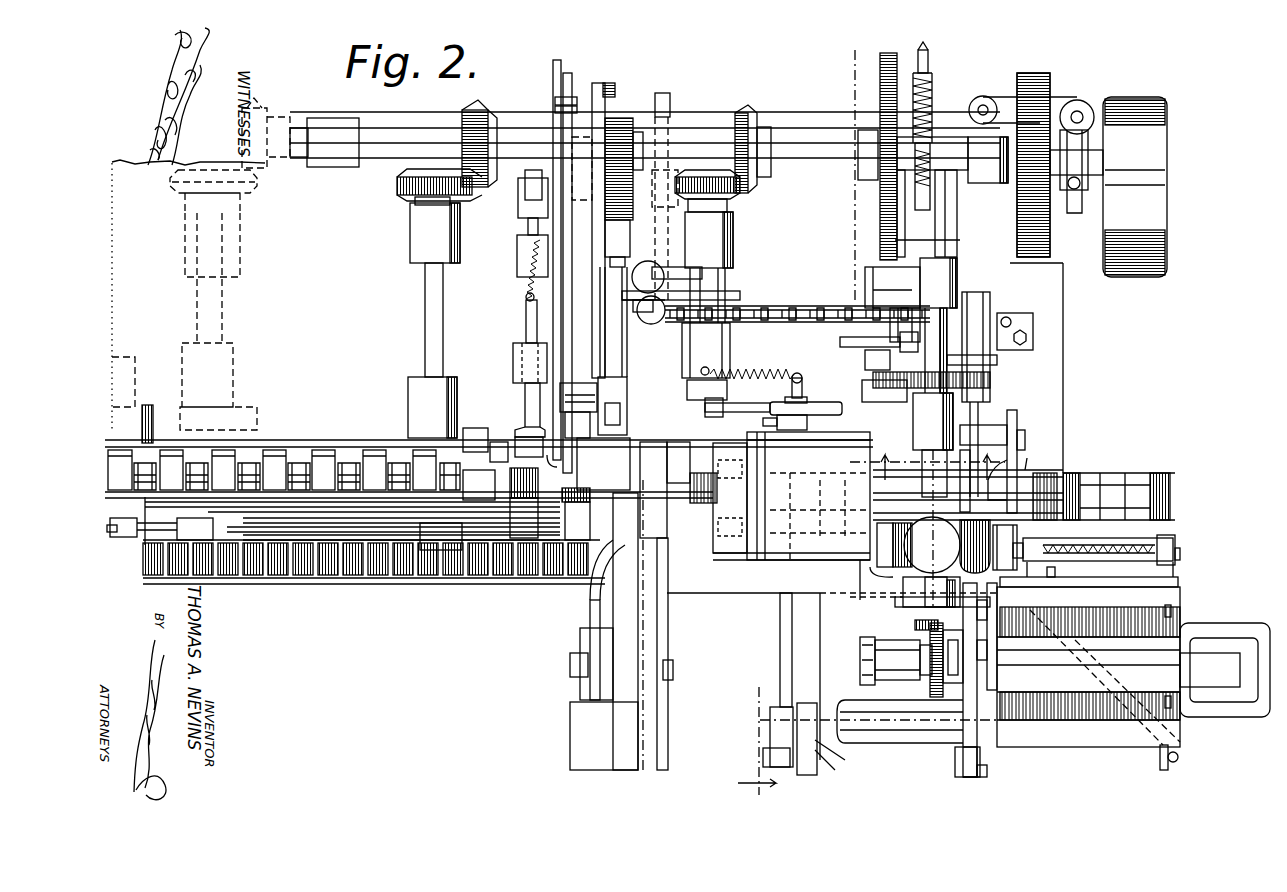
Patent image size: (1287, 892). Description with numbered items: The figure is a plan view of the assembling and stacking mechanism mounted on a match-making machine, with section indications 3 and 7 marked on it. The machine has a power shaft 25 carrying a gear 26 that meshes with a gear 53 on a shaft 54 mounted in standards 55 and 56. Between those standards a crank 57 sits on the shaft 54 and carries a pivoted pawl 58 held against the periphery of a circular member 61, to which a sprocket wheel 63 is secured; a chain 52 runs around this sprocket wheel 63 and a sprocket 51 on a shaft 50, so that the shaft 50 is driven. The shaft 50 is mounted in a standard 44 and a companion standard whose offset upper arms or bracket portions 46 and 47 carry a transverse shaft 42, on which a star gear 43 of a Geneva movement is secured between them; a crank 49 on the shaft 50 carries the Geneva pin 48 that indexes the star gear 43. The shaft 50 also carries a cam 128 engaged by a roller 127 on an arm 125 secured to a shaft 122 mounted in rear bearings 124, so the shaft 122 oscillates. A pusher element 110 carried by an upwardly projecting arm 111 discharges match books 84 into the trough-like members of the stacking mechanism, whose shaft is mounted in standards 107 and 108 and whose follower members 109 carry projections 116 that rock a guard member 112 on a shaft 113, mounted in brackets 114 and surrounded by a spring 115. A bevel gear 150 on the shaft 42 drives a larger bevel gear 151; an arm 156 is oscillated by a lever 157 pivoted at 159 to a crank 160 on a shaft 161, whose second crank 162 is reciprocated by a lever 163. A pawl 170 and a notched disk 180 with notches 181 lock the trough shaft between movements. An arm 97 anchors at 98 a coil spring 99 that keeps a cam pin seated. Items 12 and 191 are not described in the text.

The section line 3- 3 is at (860, 72).
The section line 7-7 / carriage 7 is at (920, 467).
The vertical column 12 is at (998, 306).
The power shaft 25 is at (798, 150).
The gear 26 is at (748, 118).
The shaft 42 is at (1017, 437).
The star gear 43 is at (978, 382).
The standard 44 is at (865, 393).
The offset upper arm or bracket portion 46 is at (870, 278).
The offset upper arm or bracket portion 47 is at (940, 285).
The pin 48 is at (865, 357).
The crank 49 is at (865, 381).
The shaft 50 is at (862, 370).
The sprocket 51 is at (870, 300).
The chain 52 is at (786, 308).
The gear 53 is at (740, 192).
The shaft 54 is at (712, 238).
The standard 55 is at (738, 258).
The standard 56 is at (733, 355).
The crank 57 is at (665, 272).
The pawl 58 is at (643, 310).
The circular member 61 is at (738, 296).
The sprocket wheel 63 is at (730, 318).
The match books 84 is at (1183, 588).
The arm 97 is at (934, 112).
The connection point of spring to arm 98 is at (930, 60).
The coil spring 99 is at (933, 88).
The standard 107 is at (1230, 680).
The standard 108 is at (903, 660).
The follower member 109 is at (1175, 610).
The pusher element 110 is at (1022, 453).
The arm 111 is at (985, 428).
The guard member 112 is at (1050, 580).
The shaft 113 is at (1178, 558).
The brackets 114 is at (1175, 547).
The spring 115 is at (1112, 548).
The projection 116 is at (1160, 770).
The shaft 122 is at (990, 410).
The bearings 124 is at (1020, 336).
The arm 125 is at (975, 359).
The roller 127 is at (965, 320).
The cam 128 is at (845, 339).
The bevel gear 150 is at (918, 624).
The bevel gear 151 is at (935, 697).
The arm 156 is at (1005, 678).
The lever 157 is at (970, 755).
The pivotal connection 159 is at (982, 772).
The crank 160 is at (958, 762).
The shaft 161 is at (900, 735).
The crank 162 is at (815, 765).
The lever 163 is at (782, 630).
The pawl 170 is at (960, 680).
The notched disk 180 is at (851, 661).
The notches 181 is at (862, 662).
The stud 191 is at (1175, 760).